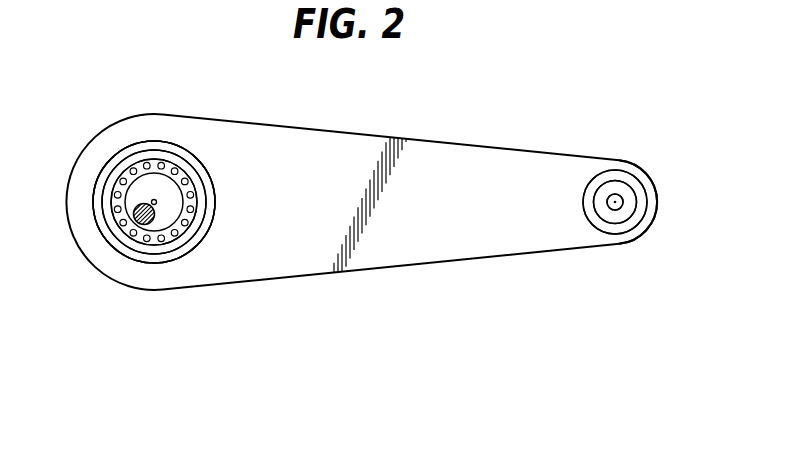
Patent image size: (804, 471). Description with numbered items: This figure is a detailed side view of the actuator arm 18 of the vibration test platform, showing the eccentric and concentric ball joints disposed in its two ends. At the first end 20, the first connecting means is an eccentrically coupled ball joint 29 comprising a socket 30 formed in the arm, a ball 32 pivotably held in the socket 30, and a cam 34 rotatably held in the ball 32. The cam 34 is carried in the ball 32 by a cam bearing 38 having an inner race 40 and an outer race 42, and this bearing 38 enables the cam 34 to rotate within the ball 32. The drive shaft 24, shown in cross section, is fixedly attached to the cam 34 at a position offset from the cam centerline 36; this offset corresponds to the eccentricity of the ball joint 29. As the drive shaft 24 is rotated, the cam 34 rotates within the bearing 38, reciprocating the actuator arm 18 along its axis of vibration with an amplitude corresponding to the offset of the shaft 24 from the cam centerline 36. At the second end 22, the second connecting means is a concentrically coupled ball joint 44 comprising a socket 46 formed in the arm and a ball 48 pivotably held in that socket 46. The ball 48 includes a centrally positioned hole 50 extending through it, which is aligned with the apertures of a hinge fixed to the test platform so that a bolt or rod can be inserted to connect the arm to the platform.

The actuator arm 18 is at (421, 160).
The first end 20 is at (107, 62).
The second end 22 is at (652, 72).
The drive shaft 24 is at (137, 227).
The eccentrically coupled ball joint 29 is at (217, 195).
The socket 30 is at (169, 137).
The ball 32 is at (193, 165).
The cam 34 is at (167, 225).
The cam centerline 36 is at (161, 208).
The cam bearing 38 is at (112, 187).
The inner race 40 is at (113, 206).
The outer race 42 is at (130, 160).
The concentrically coupled ball joint 44 is at (650, 215).
The socket 46 is at (620, 172).
The ball 48 is at (615, 223).
The centrally positioned hole 50 is at (607, 210).